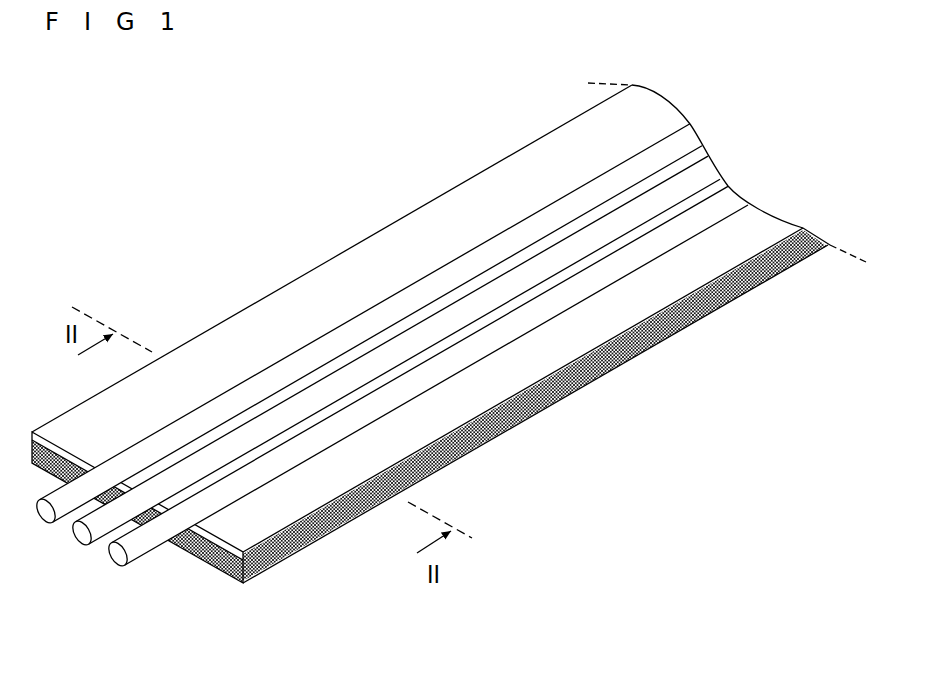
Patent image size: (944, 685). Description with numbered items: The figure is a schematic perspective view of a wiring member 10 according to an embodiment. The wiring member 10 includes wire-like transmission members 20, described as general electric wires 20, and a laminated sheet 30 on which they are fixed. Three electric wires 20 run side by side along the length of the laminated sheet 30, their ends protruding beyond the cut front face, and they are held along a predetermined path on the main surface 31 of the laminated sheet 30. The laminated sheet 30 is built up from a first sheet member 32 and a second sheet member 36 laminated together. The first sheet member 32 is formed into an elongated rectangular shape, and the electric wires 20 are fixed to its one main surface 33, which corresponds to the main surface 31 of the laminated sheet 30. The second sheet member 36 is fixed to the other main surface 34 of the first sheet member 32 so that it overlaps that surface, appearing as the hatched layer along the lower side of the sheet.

The wiring member 10 is at (449, 340).
The wire-like transmission member 20 is at (300, 406).
The laminated sheet 30 is at (430, 357).
The main surface 31 is at (398, 235).
The first sheet member 32 is at (317, 267).
The one main surface 33 is at (398, 235).
The another main surface 34 is at (504, 417).
The second sheet member 36 is at (285, 564).